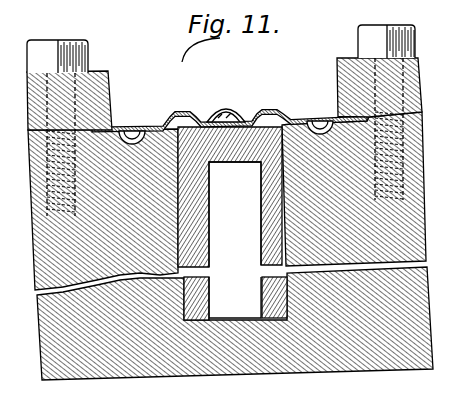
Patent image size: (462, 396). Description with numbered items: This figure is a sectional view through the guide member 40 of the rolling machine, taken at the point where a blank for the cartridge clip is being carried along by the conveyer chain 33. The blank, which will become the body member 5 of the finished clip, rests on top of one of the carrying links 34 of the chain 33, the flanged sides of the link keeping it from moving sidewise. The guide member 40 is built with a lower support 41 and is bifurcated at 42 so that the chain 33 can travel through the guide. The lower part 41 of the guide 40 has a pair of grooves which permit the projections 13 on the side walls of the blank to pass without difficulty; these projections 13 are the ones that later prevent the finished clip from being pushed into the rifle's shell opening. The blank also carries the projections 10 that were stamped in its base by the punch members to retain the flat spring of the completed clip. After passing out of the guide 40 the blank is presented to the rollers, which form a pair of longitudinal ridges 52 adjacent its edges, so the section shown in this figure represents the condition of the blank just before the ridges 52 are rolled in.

The body member 5 is at (276, 110).
The projections 10 is at (228, 110).
The projections 13 is at (330, 130).
The carrying links 34 is at (262, 268).
The guide member 40 is at (121, 112).
The lower support 41 is at (430, 261).
The bifurcation 42 is at (286, 320).
The longitudinal ridges 52 is at (397, 112).
The conveyer chain 33 is at (147, 392).